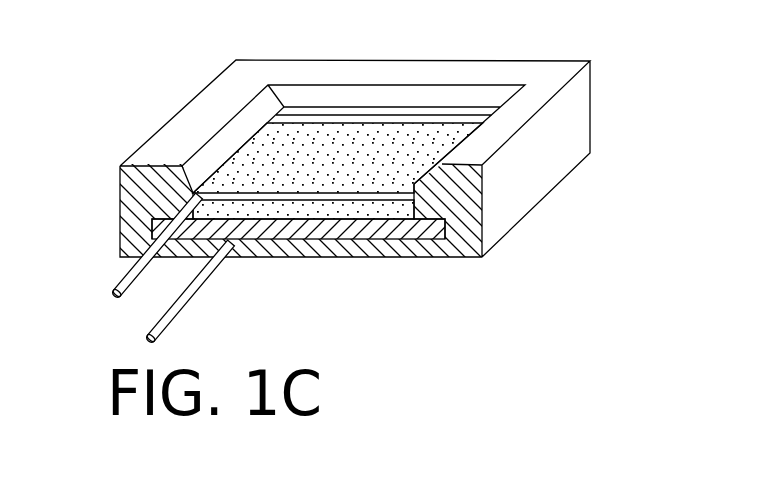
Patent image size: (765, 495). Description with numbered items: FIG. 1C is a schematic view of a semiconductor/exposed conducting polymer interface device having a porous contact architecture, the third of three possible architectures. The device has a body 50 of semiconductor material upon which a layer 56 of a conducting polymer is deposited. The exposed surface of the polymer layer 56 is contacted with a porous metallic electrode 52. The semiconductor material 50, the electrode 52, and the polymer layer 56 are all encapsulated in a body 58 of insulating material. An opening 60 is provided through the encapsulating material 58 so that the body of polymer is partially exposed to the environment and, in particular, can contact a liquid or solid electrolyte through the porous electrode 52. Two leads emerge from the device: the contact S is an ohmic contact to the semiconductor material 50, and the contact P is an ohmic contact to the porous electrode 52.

The body of semiconductor material 50 is at (341, 231).
The porous metallic electrode 52 is at (288, 173).
The layer of conducting polymer 56 is at (400, 213).
The body of insulating material 58 is at (572, 134).
The opening 60 is at (463, 108).
The ohmic contact to the electrode P is at (116, 286).
The ohmic contact to the semiconductor material S is at (190, 306).